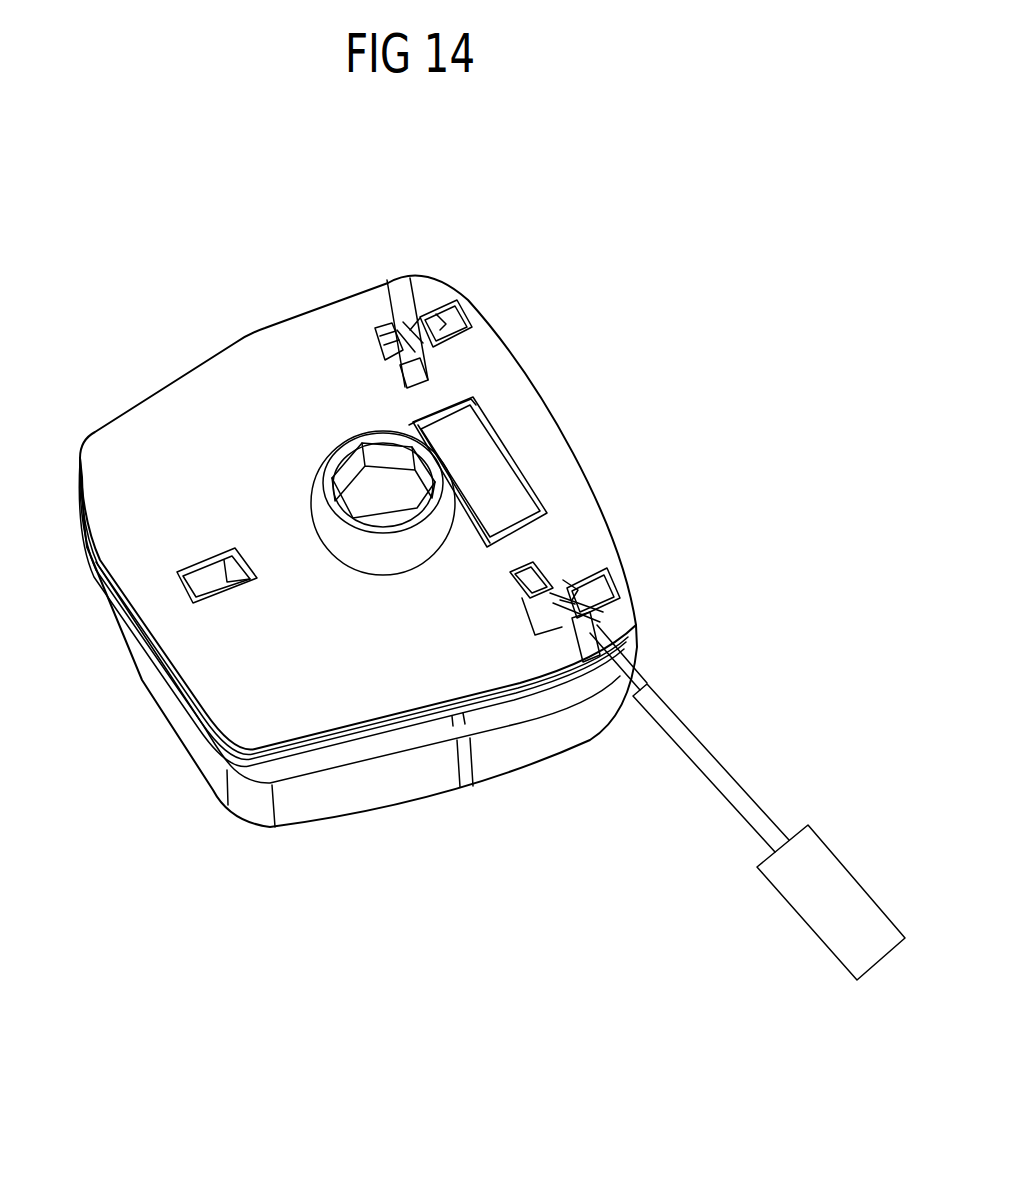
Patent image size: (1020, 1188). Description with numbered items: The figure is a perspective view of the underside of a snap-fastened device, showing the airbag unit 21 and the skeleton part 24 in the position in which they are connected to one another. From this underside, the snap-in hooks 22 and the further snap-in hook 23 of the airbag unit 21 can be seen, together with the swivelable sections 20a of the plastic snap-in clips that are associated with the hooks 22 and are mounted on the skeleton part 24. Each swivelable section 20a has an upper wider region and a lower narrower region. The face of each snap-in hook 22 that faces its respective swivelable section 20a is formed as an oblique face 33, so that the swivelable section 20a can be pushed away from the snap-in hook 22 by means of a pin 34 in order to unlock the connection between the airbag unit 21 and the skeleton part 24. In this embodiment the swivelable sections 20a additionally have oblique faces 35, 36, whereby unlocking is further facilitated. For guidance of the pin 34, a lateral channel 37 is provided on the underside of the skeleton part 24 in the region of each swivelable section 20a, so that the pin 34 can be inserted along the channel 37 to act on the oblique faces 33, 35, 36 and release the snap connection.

The swivelable section 20a is at (440, 318).
The airbag unit 21 is at (368, 795).
The snap-in hook 22 is at (448, 323).
The further snap-in hook 23 is at (197, 580).
The skeleton part 24 is at (228, 705).
The oblique face 33 is at (572, 606).
The pin 34 is at (722, 780).
The oblique face 35 is at (420, 305).
The oblique face 36 is at (432, 352).
The lateral channel 37 is at (398, 293).